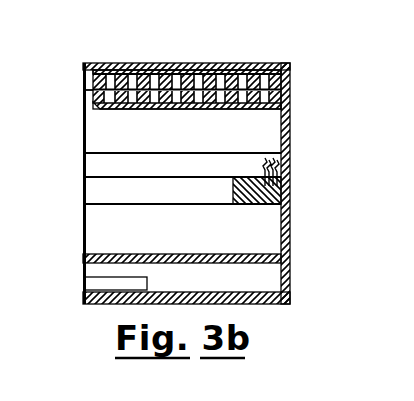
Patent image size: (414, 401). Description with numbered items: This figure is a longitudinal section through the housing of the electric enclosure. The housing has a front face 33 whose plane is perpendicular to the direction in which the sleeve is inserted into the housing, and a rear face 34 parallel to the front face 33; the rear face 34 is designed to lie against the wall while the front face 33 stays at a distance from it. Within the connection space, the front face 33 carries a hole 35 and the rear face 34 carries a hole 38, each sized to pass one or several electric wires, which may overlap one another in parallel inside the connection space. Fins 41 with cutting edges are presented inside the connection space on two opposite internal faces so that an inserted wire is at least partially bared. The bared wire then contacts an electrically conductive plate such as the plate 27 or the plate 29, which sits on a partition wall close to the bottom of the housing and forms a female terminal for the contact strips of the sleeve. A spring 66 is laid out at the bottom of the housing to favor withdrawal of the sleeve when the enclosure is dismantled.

The front face 33 is at (83, 130).
The hole 35 is at (85, 90).
The fins 41 is at (204, 63).
The hole 38 is at (284, 70).
The electrically conductive plate 27 is at (265, 107).
The rear face 34 is at (284, 147).
The spring 66 is at (283, 170).
The electrically conductive plate 29 is at (254, 204).